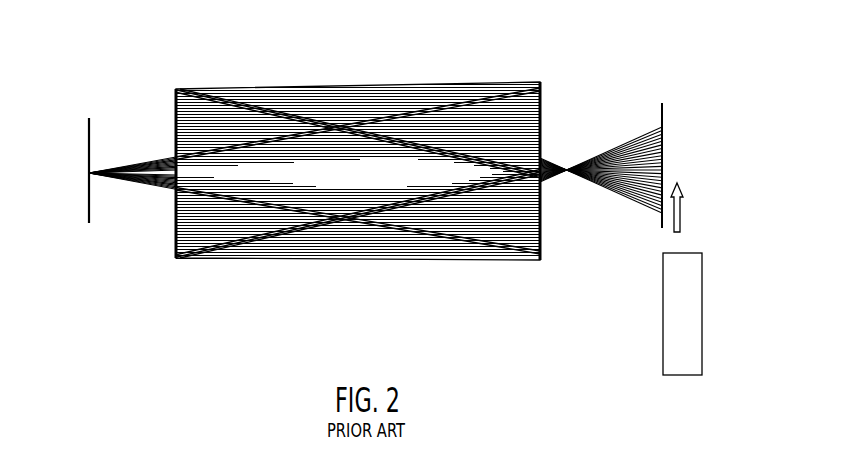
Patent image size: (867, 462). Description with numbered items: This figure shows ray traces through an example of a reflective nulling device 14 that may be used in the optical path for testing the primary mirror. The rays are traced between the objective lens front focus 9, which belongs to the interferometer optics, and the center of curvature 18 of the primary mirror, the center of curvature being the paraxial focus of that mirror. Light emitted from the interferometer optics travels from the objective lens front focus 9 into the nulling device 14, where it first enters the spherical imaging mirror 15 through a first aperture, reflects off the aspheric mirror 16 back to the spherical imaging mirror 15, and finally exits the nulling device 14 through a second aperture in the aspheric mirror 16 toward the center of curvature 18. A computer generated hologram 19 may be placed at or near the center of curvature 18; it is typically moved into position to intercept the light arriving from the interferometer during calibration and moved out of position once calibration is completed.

The objective front focus 9 is at (88, 201).
The nulling device 14 is at (259, 83).
The spherical imaging mirror 15 is at (173, 224).
The aspheric mirror 16 is at (541, 233).
The center of curvature (CoC) 18 is at (663, 114).
The CGH 19 is at (702, 340).